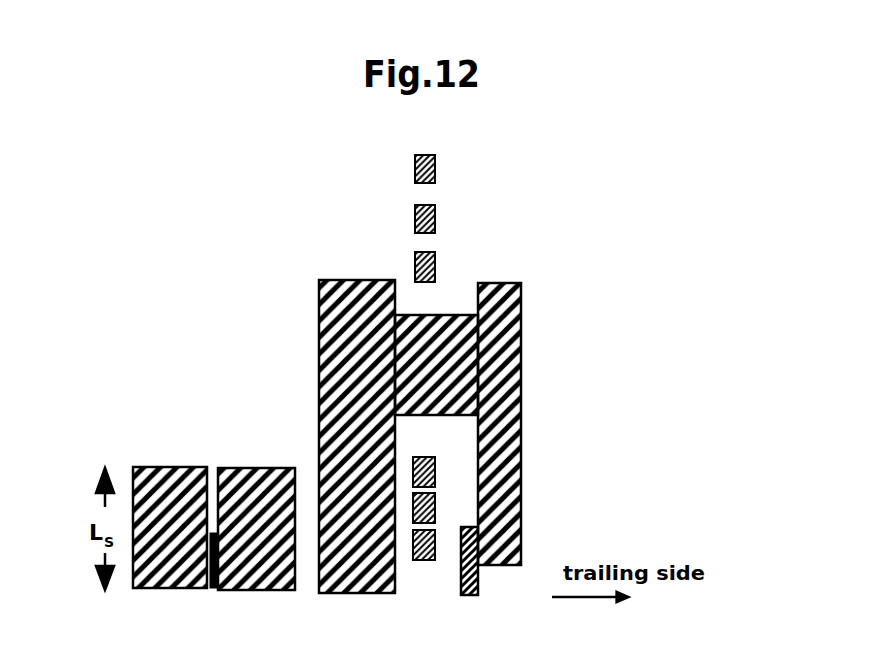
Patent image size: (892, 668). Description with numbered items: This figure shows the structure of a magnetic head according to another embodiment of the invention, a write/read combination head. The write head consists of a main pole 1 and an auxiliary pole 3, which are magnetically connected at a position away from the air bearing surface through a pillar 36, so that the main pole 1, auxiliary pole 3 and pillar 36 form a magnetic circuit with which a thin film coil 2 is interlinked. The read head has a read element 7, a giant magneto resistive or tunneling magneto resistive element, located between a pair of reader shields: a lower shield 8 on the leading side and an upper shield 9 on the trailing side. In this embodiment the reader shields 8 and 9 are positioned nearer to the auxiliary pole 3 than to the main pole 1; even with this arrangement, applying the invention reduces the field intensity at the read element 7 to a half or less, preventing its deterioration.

The main pole 1 is at (521, 497).
The thin film coil 2 is at (437, 179).
The auxiliary pole 3 is at (368, 280).
The pillar 36 is at (447, 315).
The read element 7 is at (210, 588).
The lower shield 8 is at (160, 562).
The upper shield 9 is at (273, 572).